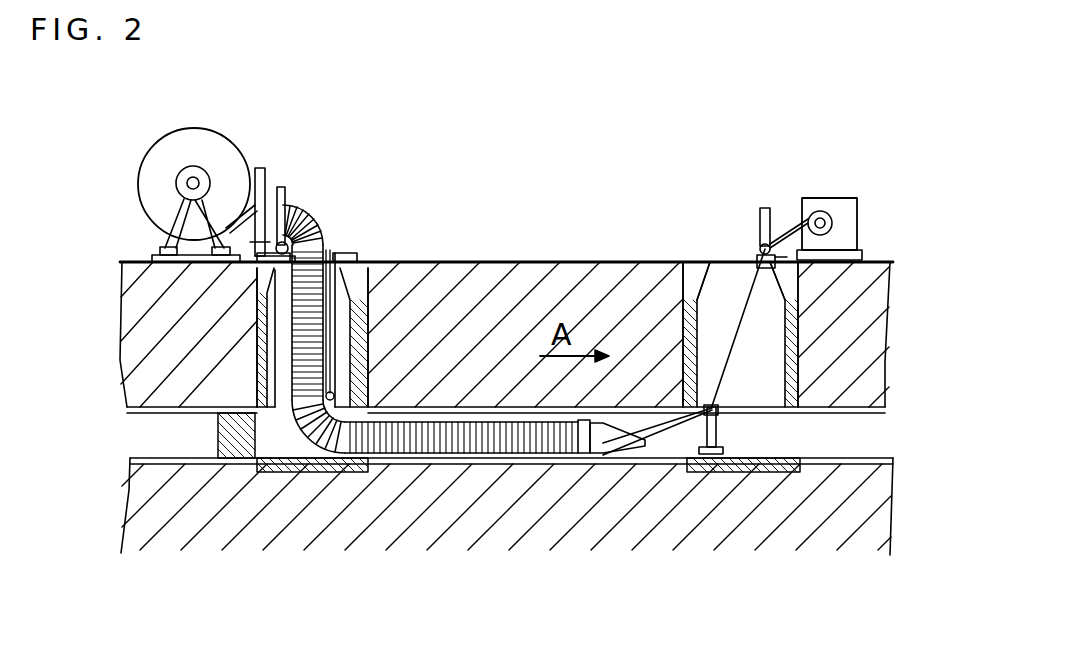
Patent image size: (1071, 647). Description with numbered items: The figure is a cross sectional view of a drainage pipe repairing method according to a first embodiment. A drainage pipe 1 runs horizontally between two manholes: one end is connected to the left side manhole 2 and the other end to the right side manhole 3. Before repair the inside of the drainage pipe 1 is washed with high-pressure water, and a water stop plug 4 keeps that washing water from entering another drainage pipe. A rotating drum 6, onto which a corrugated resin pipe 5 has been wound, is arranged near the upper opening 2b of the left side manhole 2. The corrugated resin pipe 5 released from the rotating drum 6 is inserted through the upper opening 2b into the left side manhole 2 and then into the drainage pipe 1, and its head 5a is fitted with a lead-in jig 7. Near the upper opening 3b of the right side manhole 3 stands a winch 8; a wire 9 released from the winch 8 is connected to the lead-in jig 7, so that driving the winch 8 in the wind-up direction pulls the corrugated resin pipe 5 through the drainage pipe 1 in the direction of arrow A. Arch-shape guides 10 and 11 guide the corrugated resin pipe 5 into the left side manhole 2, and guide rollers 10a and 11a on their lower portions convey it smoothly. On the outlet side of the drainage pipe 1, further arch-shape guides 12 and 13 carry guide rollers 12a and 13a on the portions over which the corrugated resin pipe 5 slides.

The drainage pipe 1 is at (493, 407).
The left side manhole 2 is at (369, 300).
The upper opening of the left side manhole 2b is at (330, 243).
The right side manhole 3 is at (683, 300).
The upper opening of the right side manhole 3b is at (712, 245).
The water stop plug 4 is at (243, 452).
The corrugated resin pipe 5 is at (435, 458).
The head of the corrugated resin pipe 5a is at (592, 447).
The rotating drum 6 is at (143, 152).
The lead-in jig 7 is at (584, 455).
The winch 8 is at (838, 198).
The wire 9 is at (653, 458).
The arch-shape guide 10 is at (262, 168).
The guide roller 10a is at (238, 178).
The arch-shape guide 11 is at (288, 197).
The guide roller 11a is at (286, 232).
The arch-shape guide 12 is at (733, 460).
The guide roller 12a is at (718, 412).
The arch-shape guide 13 is at (767, 207).
The guide roller 13a is at (760, 242).